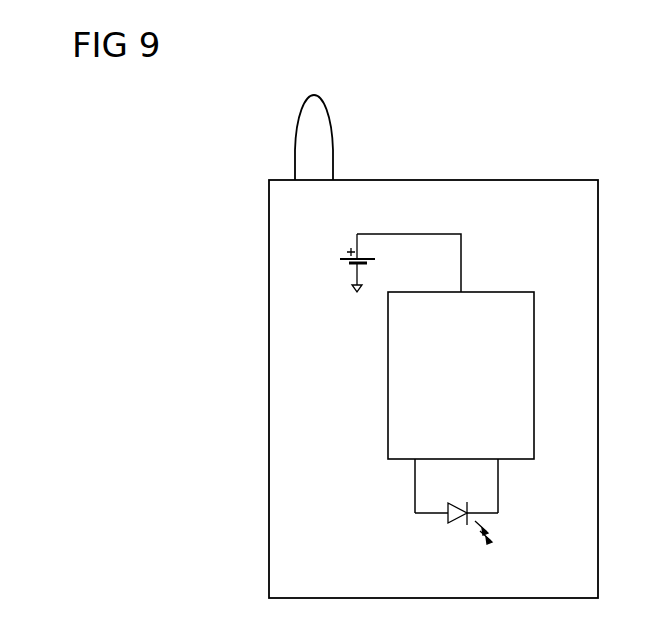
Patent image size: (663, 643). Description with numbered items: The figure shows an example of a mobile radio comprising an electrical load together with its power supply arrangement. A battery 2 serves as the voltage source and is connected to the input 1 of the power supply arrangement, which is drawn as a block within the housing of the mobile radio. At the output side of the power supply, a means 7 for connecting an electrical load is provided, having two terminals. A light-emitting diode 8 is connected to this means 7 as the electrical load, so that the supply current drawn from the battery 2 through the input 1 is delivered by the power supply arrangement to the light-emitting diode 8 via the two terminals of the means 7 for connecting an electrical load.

The input 1 is at (464, 289).
The battery 2 is at (336, 254).
The means for connecting an electrical load 7 is at (413, 461).
The light-emitting diode 8 is at (452, 507).